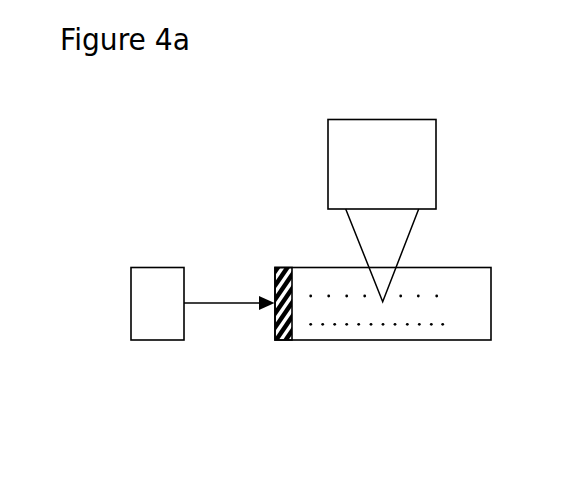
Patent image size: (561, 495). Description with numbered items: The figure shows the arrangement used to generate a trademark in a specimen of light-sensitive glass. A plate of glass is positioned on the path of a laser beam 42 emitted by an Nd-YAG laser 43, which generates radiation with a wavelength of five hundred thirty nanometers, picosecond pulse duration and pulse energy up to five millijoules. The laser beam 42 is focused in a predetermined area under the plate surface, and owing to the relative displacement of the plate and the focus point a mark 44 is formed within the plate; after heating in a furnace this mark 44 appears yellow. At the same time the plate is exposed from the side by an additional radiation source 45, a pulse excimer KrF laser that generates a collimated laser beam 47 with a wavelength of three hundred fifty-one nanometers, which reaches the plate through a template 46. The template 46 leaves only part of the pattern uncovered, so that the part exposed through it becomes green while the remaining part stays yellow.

The laser beam 42 is at (363, 245).
The Nd-YAG laser 43 is at (436, 153).
The mark 44 is at (401, 303).
The additional radiation source 45 is at (131, 323).
The template 46 is at (276, 340).
The collimated laser beam 47 is at (239, 303).